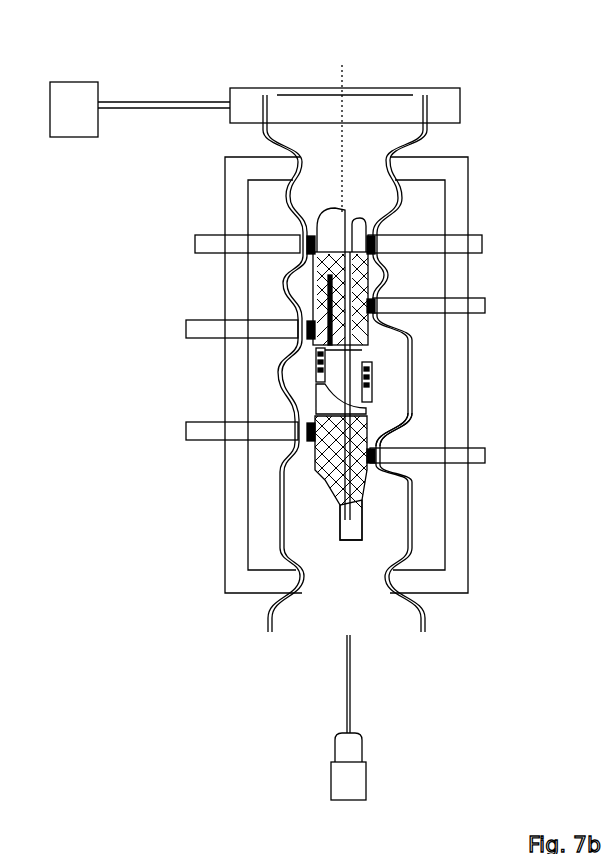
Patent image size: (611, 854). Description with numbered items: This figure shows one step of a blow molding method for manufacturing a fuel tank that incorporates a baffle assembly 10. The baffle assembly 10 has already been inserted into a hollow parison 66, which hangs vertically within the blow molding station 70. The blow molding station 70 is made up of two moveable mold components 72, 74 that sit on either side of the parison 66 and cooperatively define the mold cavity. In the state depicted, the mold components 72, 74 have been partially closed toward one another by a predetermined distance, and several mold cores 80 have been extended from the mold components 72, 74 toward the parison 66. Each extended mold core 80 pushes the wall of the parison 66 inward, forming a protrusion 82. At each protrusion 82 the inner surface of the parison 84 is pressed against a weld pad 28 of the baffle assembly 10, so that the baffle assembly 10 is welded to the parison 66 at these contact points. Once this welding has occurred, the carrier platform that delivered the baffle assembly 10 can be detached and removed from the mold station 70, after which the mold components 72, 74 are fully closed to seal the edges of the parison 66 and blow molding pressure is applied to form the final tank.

The baffle assembly 10 is at (350, 207).
The weld pads 28 is at (378, 480).
The hollow parison 66 is at (265, 613).
The blow molding station 70 is at (498, 160).
The mold component 72 is at (237, 463).
The mold component 74 is at (458, 508).
The mold cores 80 is at (215, 242).
The protrusion 82 is at (393, 432).
The inner surface of parison 84 is at (408, 370).